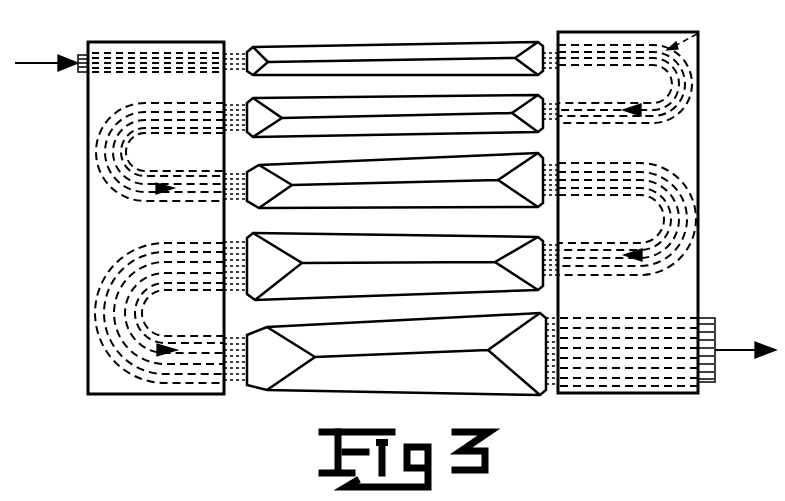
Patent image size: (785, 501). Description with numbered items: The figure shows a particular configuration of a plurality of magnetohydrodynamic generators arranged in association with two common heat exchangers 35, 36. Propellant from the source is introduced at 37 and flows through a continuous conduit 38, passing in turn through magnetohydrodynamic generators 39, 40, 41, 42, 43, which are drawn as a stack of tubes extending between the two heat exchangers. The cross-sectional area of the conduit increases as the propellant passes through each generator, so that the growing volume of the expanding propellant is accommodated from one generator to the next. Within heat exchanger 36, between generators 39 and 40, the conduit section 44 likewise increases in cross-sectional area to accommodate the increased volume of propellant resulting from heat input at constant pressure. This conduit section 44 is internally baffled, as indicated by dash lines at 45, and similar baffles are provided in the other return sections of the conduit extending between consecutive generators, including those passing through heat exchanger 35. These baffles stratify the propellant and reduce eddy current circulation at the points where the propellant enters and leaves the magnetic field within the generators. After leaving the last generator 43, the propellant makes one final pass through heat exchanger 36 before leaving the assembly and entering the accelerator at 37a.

The heat exchanger 35 is at (203, 395).
The heat exchanger 36 is at (588, 394).
The propellant inlet 37 is at (50, 66).
The accelerator entry point 37a is at (737, 352).
The continuous conduit 38 is at (104, 53).
The magnetohydrodynamic generator 39 is at (338, 46).
The magnetohydrodynamic generator 40 is at (345, 99).
The magnetohydrodynamic generator 41 is at (344, 167).
The magnetohydrodynamic generator 42 is at (346, 233).
The magnetohydrodynamic generator 43 is at (347, 327).
The conduit section 44 is at (700, 33).
The internal baffles 45 is at (632, 50).